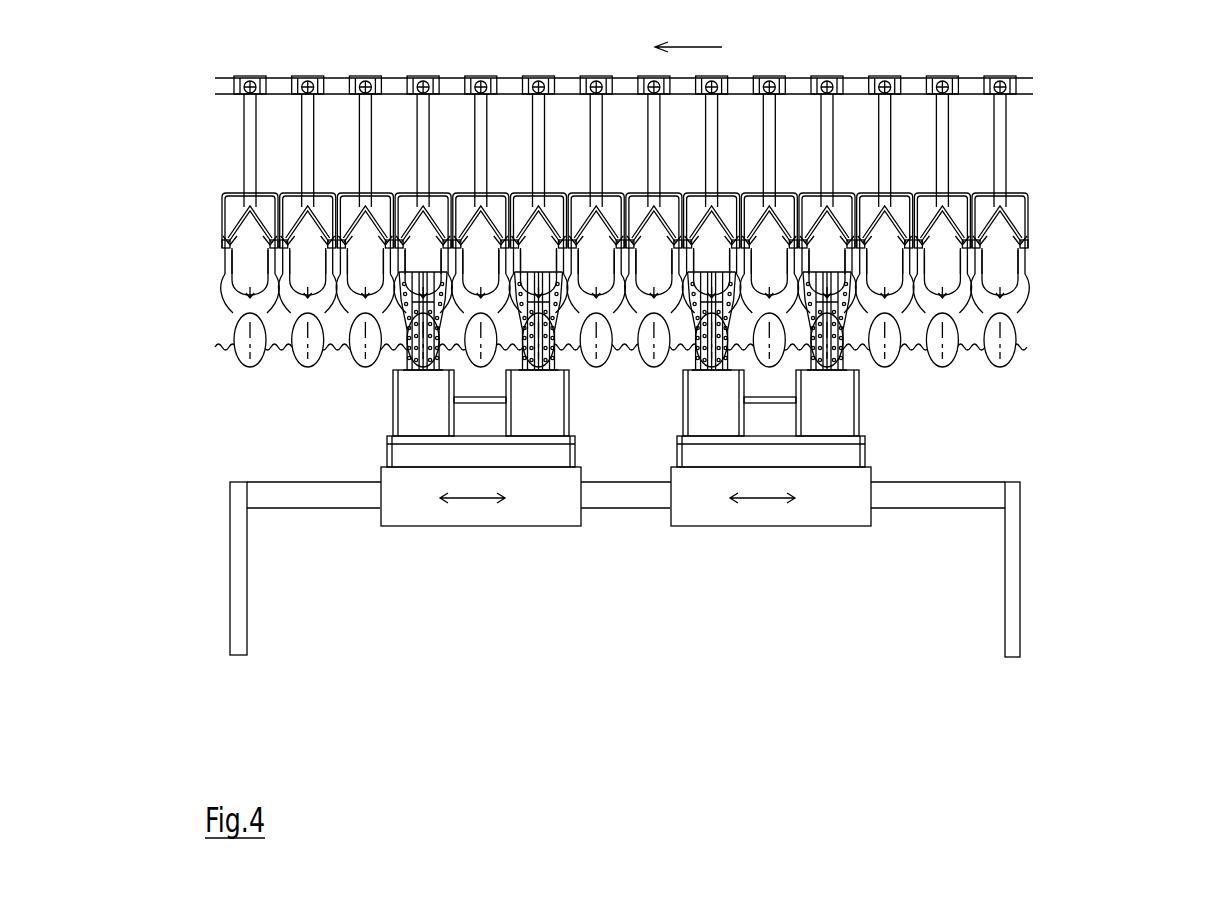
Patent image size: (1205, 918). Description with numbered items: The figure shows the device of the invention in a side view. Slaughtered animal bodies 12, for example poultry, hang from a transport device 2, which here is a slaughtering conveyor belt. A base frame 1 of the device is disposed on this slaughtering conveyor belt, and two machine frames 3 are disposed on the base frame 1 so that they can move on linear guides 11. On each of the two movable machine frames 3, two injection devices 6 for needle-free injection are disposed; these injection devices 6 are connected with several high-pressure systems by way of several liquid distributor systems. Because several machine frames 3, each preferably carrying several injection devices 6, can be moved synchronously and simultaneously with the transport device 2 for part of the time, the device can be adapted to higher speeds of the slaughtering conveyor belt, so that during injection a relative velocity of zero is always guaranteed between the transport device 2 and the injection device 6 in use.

The base frame 1 is at (237, 585).
The transport device 2 is at (1007, 148).
The machine frame 3 is at (535, 512).
The injection device 6 is at (748, 410).
The linear guide 11 is at (297, 499).
The slaughtered animal body 12 is at (1007, 332).